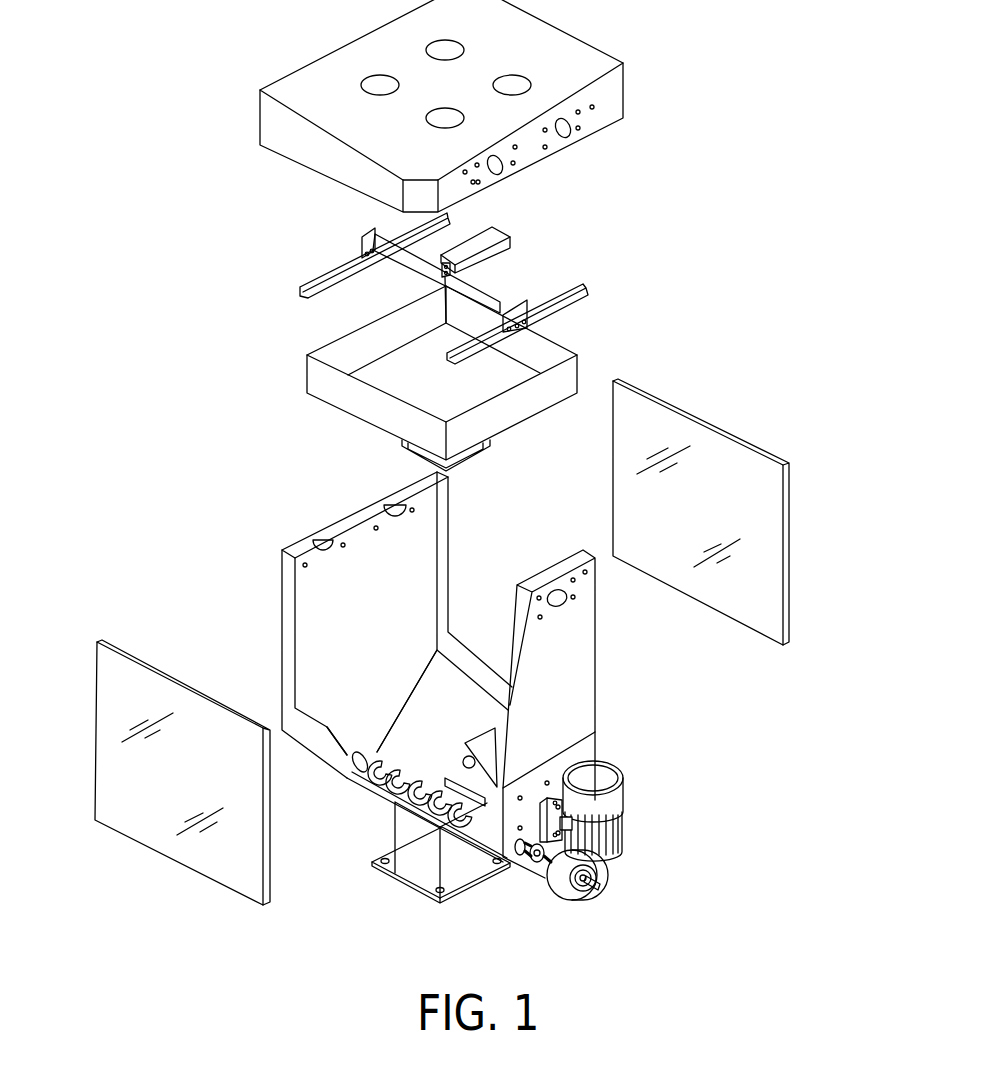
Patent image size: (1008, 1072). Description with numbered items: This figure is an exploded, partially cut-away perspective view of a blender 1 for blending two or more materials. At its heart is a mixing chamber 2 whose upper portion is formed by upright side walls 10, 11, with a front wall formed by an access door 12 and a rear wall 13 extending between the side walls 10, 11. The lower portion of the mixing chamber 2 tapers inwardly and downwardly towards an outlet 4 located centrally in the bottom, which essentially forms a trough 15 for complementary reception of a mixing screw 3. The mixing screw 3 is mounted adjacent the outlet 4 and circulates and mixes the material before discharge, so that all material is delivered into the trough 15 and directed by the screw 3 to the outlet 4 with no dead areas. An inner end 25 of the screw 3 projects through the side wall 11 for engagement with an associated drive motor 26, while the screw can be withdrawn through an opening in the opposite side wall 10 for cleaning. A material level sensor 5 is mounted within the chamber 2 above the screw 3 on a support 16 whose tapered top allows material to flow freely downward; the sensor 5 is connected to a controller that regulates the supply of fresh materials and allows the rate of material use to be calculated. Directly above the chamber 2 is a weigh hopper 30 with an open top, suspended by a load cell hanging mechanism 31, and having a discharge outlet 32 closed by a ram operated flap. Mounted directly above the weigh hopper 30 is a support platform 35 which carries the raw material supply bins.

The blender 1 is at (703, 206).
The mixing chamber 2 is at (598, 683).
The mixing screw 3 is at (383, 797).
The outlet 4 is at (448, 782).
The material level sensor 5 is at (467, 735).
The side wall 10 is at (312, 587).
The side wall 11 is at (578, 637).
The access door 12 is at (125, 818).
The rear wall 13 is at (711, 446).
The trough 15 is at (472, 860).
The support 16 is at (490, 748).
The inner end of the screw 25 is at (533, 870).
The drive motor 26 is at (623, 788).
The weigh hopper 30 is at (563, 347).
The load cell hanging mechanism 31 is at (493, 287).
The discharge outlet 32 is at (475, 455).
The support platform 35 is at (577, 52).